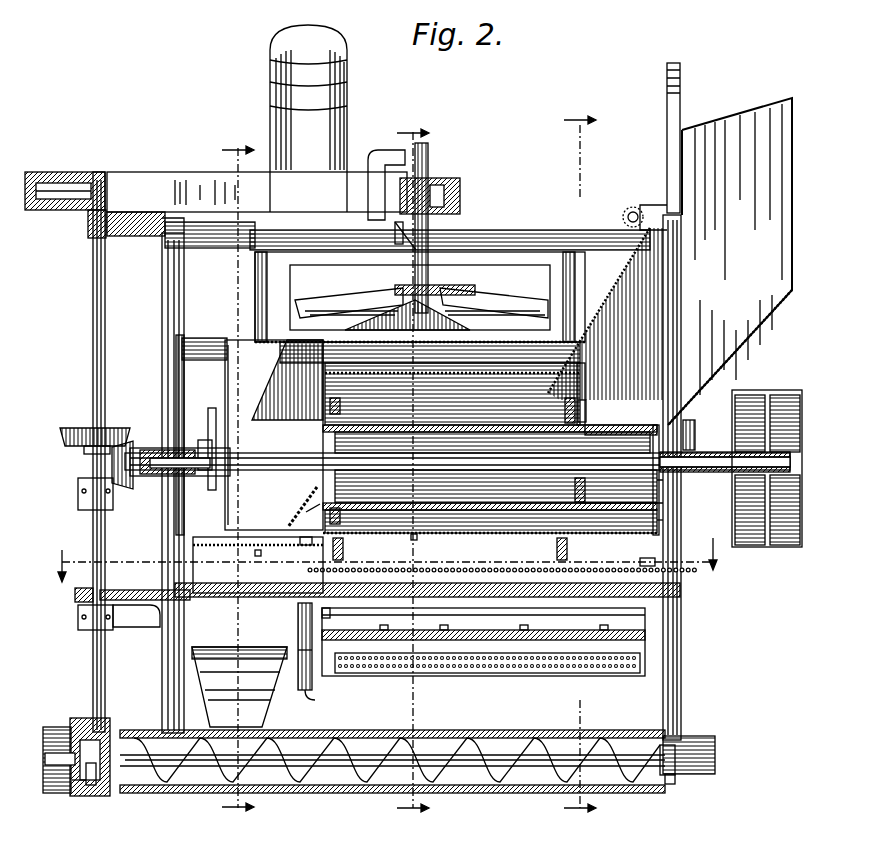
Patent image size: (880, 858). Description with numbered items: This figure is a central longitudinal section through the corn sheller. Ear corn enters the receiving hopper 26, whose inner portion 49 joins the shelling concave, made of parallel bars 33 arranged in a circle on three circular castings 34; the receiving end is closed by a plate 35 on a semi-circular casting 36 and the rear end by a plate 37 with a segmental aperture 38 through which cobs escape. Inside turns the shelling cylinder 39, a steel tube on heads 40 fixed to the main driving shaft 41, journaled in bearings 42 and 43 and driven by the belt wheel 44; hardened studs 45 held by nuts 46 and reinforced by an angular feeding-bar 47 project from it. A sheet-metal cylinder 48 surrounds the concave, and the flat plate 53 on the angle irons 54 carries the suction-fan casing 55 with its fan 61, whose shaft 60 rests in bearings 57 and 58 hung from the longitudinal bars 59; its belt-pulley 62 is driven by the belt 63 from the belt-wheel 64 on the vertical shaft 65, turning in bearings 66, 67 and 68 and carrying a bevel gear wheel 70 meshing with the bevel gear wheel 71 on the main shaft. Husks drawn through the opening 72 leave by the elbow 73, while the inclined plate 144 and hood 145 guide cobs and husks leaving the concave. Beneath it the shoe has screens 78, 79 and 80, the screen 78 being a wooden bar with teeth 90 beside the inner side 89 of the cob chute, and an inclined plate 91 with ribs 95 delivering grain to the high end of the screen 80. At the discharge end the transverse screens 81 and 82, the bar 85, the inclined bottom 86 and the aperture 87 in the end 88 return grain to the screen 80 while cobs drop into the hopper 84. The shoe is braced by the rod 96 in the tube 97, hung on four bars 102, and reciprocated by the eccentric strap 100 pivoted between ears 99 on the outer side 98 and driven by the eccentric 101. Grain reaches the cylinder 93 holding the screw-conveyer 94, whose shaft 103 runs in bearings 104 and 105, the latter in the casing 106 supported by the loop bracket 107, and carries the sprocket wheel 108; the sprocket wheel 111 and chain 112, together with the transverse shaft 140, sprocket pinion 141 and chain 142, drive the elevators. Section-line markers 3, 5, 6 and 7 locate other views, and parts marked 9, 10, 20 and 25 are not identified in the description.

The section line 3- 3 is at (385, 562).
The section line 5- 5 is at (238, 480).
The section line 6- 6 is at (413, 471).
The section line 7- 7 is at (580, 466).
The bearing block 9 is at (330, 406).
The drum shell 10 is at (575, 460).
The conveyor shaft bearing 20 is at (713, 762).
The frame column 25 is at (162, 681).
The receiving hopper 26 is at (723, 120).
The parallel bars 33 is at (472, 370).
The circular castings 34 is at (343, 548).
The plate 35 is at (672, 506).
The semi-circular casting 36 is at (676, 521).
The metal plate 37 is at (312, 489).
The segmental aperture 38 is at (324, 430).
The shelling cylinder 39 is at (625, 426).
The heads 40 is at (418, 432).
The main driving shaft 41 is at (478, 457).
The bearing 42 is at (705, 452).
The bearing 43 is at (150, 447).
The belt wheel 44 is at (765, 393).
The studs 45 is at (572, 392).
The nuts 46 is at (545, 476).
The angular feeding-bar 47 is at (585, 412).
The sheet-metal cylinder 48 is at (510, 372).
The portion of receiving hopper 49 is at (613, 298).
The flat plate 53 is at (268, 342).
The longitudinal angle irons 54 is at (205, 345).
The suction-fan casing 55 is at (263, 296).
The bearing 57 is at (433, 243).
The bearing 58 is at (440, 172).
The longitudinal bars 59 is at (556, 232).
The fan shaft 60 is at (429, 150).
The suction fan 61 is at (492, 284).
The belt-pulley 62 is at (452, 193).
The belt 63 is at (187, 178).
The belt-wheel 64 is at (72, 176).
The vertical shaft 65 is at (93, 292).
The bearing 66 is at (88, 228).
The bearing 67 is at (78, 494).
The bearing 68 is at (78, 618).
The bevel gear wheel 70 is at (78, 428).
The bevel gear wheel 71 is at (124, 445).
The circular opening 72 is at (430, 302).
The elbow 73 is at (330, 136).
The screen 78 is at (414, 540).
The screen 79 is at (478, 630).
The bottom screen 80 is at (480, 678).
The transverse screen 81 is at (258, 552).
The transverse screen 82 is at (268, 595).
The hopper 84 is at (239, 687).
The bar 85 is at (304, 650).
The inclined bottom 86 is at (298, 635).
The longitudinal aperture 87 is at (312, 680).
The end 88 is at (330, 628).
The inner side 89 is at (300, 545).
The teeth 90 is at (640, 561).
The inclined plate 91 is at (576, 638).
The cylinder 93 is at (533, 793).
The screw-conveyer 94 is at (498, 786).
The ribs 95 is at (525, 630).
The rod 96 is at (238, 562).
The tube 97 is at (277, 562).
The outer side 98 is at (188, 560).
The ears 99 is at (162, 623).
The eccentric strap 100 is at (148, 590).
The eccentric 101 is at (76, 597).
The bars 102 is at (182, 398).
The shaft 103 is at (672, 776).
The bearing 104 is at (678, 750).
The bearing 105 is at (62, 773).
The shelled-corn-conveyer casing 106 is at (75, 722).
The loop bracket 107 is at (72, 786).
The sprocket wheel 108 is at (92, 788).
The sprocket wheel 111 is at (204, 440).
The sprocket chain 112 is at (210, 412).
The transverse shaft 140 is at (627, 217).
The sprocket pinion 141 is at (629, 207).
The sprocket chain 142 is at (656, 203).
The inclined plate 144 is at (305, 512).
The hood 145 is at (272, 393).